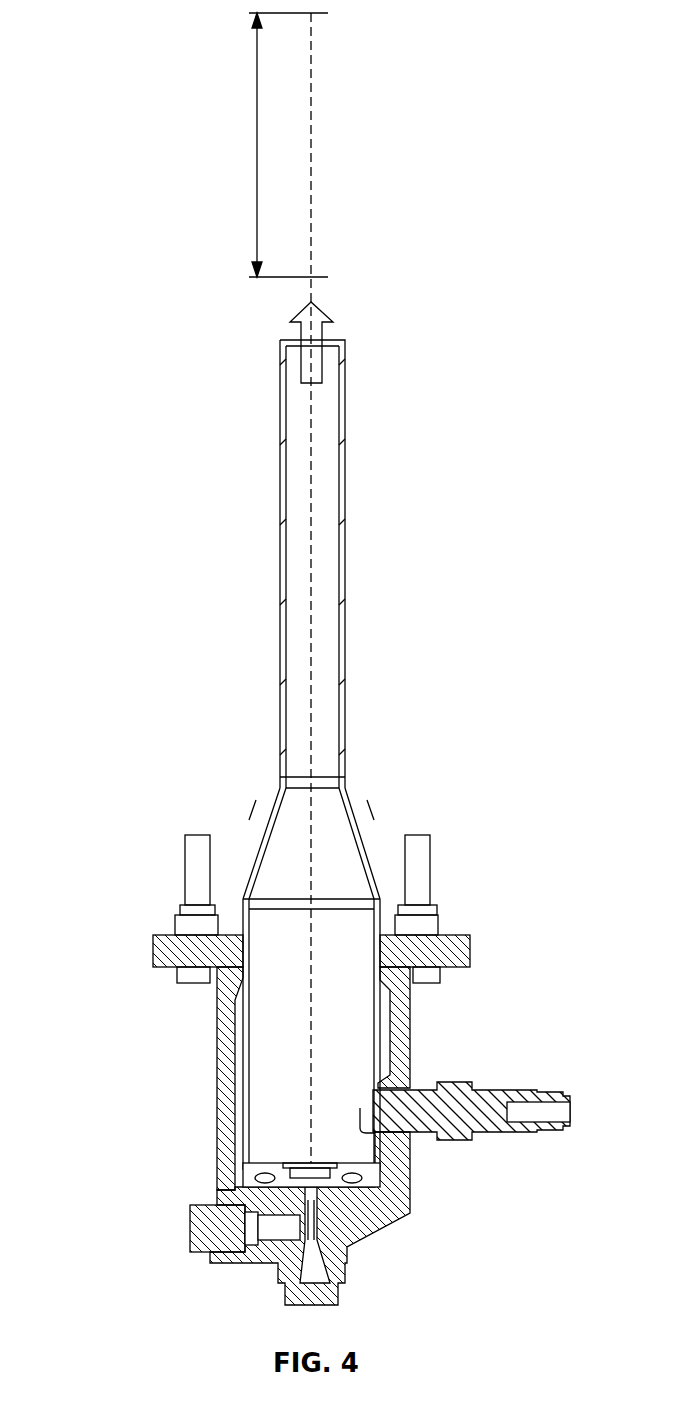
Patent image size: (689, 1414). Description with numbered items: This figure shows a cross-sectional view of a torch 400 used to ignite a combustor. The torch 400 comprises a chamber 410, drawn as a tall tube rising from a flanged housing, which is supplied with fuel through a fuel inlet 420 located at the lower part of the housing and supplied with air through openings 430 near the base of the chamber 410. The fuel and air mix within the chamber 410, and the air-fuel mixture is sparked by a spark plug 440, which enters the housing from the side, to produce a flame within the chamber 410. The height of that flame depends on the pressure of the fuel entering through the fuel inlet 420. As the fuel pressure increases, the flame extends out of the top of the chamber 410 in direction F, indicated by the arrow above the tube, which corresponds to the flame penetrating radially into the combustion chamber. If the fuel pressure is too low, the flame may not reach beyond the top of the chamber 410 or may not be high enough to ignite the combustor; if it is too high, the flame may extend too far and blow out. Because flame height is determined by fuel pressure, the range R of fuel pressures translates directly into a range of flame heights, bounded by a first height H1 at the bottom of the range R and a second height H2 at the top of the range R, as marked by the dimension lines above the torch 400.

The torch 400 is at (101, 269).
The chamber 410 is at (340, 978).
The fuel inlet 420 is at (200, 1225).
The openings 430 is at (270, 1165).
The spark plug 440 is at (475, 1110).
The direction F is at (323, 358).
The range of fuel pressures R is at (257, 143).
The first height H1 is at (266, 280).
The second height H2 is at (266, 17).